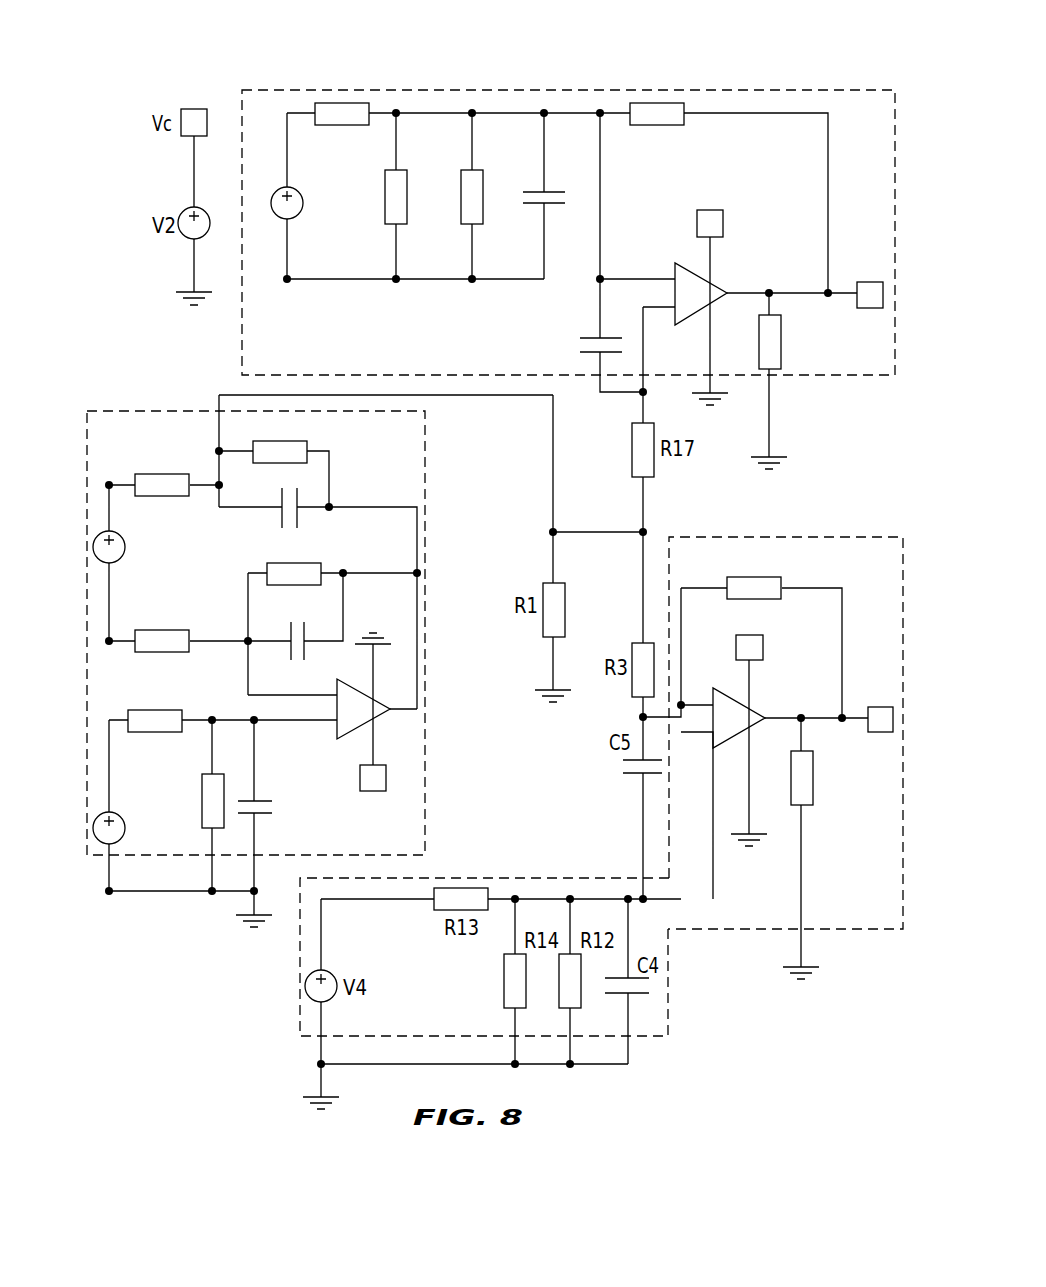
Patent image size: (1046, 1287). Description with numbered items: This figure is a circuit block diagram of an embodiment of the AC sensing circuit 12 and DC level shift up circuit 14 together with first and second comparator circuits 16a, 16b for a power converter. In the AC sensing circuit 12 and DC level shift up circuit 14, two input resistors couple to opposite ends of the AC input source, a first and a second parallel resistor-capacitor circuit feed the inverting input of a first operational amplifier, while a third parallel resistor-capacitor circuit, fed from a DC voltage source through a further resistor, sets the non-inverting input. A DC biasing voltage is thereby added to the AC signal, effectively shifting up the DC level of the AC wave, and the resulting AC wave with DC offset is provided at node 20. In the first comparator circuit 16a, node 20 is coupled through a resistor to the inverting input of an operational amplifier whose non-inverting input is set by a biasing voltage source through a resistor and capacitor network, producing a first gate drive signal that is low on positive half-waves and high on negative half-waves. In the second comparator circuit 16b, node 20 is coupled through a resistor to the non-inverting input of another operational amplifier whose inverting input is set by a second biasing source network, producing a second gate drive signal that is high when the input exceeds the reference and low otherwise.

The first comparator circuit 16a is at (328, 90).
The AC sensing circuit 12 is at (178, 411).
The DC level shift up circuit 14 is at (319, 646).
The node 20 is at (643, 532).
The second comparator circuit 16b is at (808, 537).